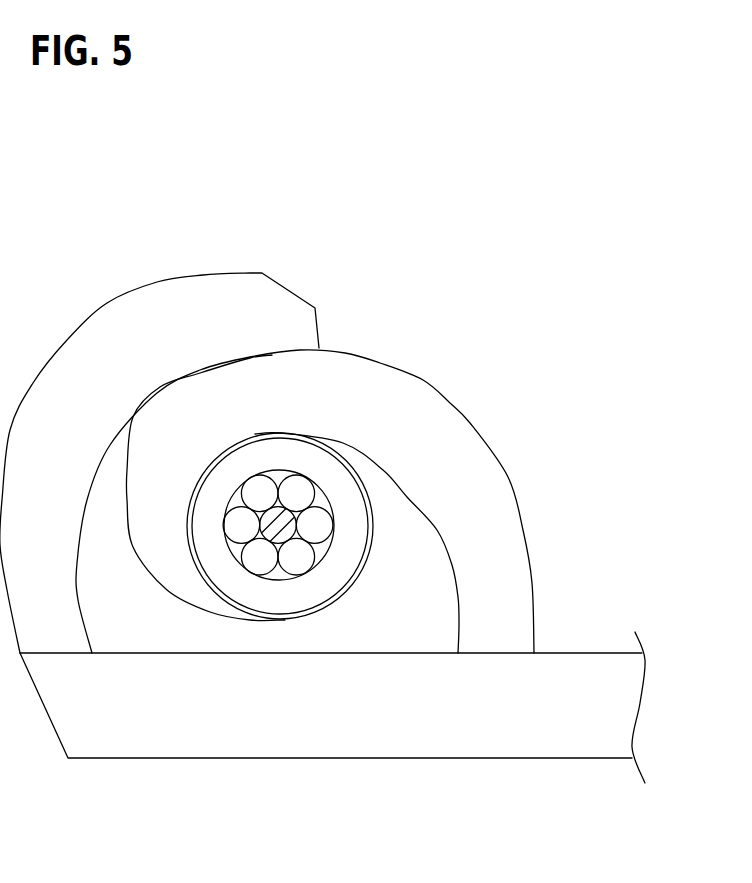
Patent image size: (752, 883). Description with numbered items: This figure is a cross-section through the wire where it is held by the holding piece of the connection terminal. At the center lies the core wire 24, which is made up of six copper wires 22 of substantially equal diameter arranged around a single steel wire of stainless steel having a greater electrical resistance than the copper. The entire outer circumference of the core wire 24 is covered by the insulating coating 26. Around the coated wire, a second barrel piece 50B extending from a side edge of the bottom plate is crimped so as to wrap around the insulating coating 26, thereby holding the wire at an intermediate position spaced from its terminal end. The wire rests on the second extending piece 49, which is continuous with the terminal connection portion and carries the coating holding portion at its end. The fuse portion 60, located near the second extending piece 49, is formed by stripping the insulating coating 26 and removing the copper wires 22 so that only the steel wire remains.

The copper wire 22 is at (375, 792).
The core wire 24 is at (543, 443).
The insulating coating 26 is at (347, 527).
The fuse portion 60 is at (284, 522).
The second barrel piece 50B is at (380, 403).
The second extending piece 49 is at (253, 795).